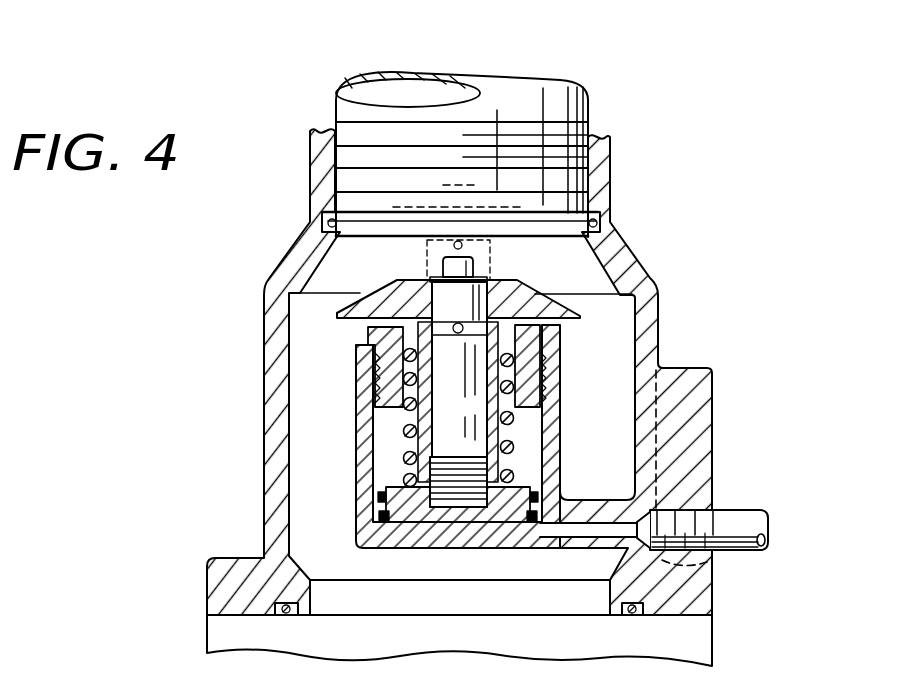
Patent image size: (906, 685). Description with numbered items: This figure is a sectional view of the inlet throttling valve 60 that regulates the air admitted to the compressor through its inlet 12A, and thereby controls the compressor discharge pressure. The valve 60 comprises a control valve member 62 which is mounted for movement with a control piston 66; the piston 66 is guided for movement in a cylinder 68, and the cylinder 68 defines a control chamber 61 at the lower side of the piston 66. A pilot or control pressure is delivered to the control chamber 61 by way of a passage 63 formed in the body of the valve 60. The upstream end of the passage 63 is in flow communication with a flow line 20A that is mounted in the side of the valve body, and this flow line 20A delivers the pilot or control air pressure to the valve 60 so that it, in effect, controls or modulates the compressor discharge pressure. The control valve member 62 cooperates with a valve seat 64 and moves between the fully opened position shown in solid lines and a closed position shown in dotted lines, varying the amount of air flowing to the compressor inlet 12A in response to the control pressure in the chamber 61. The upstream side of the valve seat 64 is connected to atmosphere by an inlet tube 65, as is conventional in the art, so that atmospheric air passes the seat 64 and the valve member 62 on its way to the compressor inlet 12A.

The inlet throttling valve 60 is at (645, 262).
The inlet 12A is at (712, 648).
The control piston 66 is at (378, 475).
The passage 63 is at (592, 524).
The control chamber 61 is at (503, 552).
The cylinder 68 is at (541, 424).
The control valve member 62 is at (385, 280).
The valve seat 64 is at (330, 222).
The inlet tube 65 is at (585, 103).
The flow line 20A is at (738, 518).